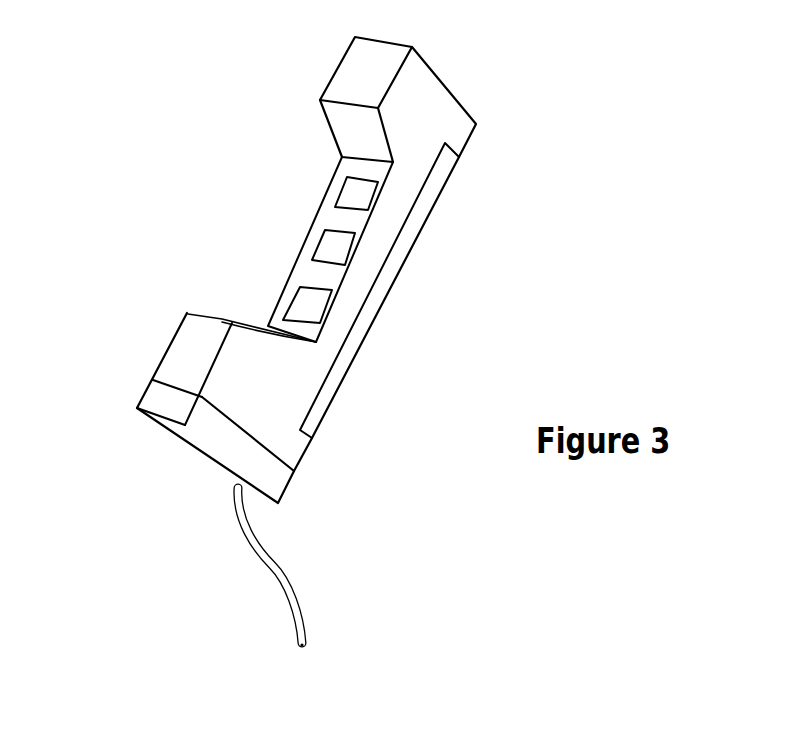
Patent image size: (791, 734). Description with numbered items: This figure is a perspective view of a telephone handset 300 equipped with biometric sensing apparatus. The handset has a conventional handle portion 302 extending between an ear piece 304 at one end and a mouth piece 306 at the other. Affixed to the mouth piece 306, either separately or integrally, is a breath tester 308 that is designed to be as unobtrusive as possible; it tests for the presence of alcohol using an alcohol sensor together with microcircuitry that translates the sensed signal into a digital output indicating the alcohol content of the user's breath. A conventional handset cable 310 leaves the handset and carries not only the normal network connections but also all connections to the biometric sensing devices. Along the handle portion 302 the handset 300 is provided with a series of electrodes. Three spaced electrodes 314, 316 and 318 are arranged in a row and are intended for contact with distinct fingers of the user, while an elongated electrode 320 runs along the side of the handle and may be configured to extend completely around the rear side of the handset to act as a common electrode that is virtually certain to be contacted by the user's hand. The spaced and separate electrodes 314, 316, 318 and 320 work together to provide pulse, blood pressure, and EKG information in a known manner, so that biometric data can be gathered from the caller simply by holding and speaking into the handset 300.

The telephone handset 300 is at (371, 329).
The handle portion 302 is at (377, 313).
The ear piece 304 is at (357, 68).
The mouth piece 306 is at (182, 350).
The breath tester 308 is at (197, 455).
The handset cable 310 is at (295, 597).
The electrode 314 is at (348, 197).
The electrode 316 is at (323, 248).
The electrode 318 is at (302, 308).
The electrode 320 is at (417, 235).